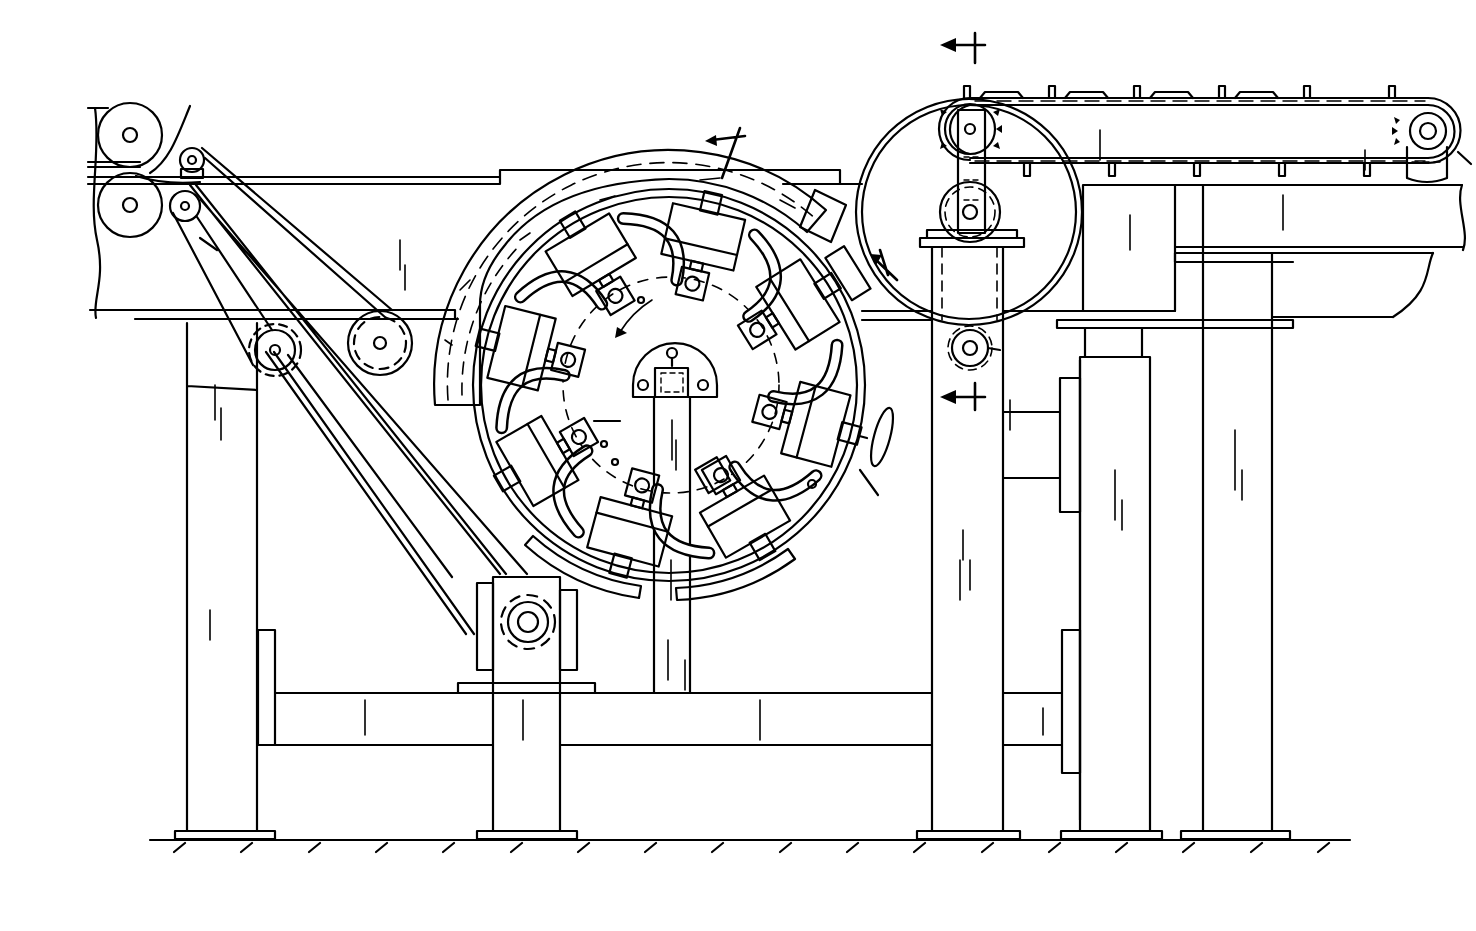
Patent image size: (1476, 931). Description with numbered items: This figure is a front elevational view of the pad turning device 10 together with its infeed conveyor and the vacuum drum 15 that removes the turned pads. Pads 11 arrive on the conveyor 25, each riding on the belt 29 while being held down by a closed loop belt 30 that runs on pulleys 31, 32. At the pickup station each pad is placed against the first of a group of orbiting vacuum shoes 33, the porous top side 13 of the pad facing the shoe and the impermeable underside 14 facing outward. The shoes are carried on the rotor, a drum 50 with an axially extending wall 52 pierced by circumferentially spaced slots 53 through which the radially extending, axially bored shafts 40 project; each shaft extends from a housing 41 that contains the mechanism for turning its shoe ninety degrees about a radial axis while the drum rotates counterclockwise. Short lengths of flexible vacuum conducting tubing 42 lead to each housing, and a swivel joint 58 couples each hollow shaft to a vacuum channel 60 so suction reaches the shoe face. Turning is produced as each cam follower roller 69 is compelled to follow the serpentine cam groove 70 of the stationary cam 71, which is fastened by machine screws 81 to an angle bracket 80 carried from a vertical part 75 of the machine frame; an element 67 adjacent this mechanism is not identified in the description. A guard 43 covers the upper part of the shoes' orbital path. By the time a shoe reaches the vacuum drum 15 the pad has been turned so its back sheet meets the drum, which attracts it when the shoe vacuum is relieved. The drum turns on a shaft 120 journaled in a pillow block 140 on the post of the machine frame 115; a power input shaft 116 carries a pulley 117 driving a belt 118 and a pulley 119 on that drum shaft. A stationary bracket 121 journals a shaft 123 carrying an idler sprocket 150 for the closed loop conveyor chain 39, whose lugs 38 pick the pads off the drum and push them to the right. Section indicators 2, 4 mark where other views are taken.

The pad turning device 10 is at (862, 548).
The pad 11 is at (1240, 65).
The top side 13 is at (742, 590).
The underside 14 is at (786, 585).
The vacuum drum 15 is at (893, 88).
The conveyor 25 is at (374, 528).
The belt 29 is at (318, 292).
The closed loop belt 30 is at (292, 229).
The pulley 31 is at (201, 152).
The pulley 32 is at (388, 313).
The vacuum shoe 33 is at (525, 537).
The lugs 38 is at (1058, 97).
The closed loop conveyor chain 39 is at (1183, 108).
The axially bored shaft 40 is at (815, 486).
The housing 41 is at (802, 512).
The flexible vacuum conducting tubing 42 is at (758, 372).
The guard 43 is at (698, 160).
The drum 50 is at (870, 336).
The axially extending wall 52 is at (879, 497).
The slots 53 is at (883, 406).
The swivel joint 58 is at (711, 466).
The vacuum channel 60 is at (798, 206).
The cam follower 67 is at (654, 305).
The cam follower roller 69 is at (630, 452).
The cam groove 70 is at (606, 443).
The stationary cam 71 is at (609, 409).
The vertical part of the machine frame 75 is at (694, 688).
The angle bracket 80 is at (688, 350).
The machine screws 81 is at (697, 342).
The machine frame 115 is at (1005, 540).
The shaft 116 is at (992, 345).
The pulley 117 is at (990, 353).
The belt 118 is at (1000, 288).
The pulley 119 is at (953, 196).
The shaft 120 is at (992, 212).
The bracket 121 is at (988, 172).
The shaft 123 is at (960, 108).
The pillow block 140 is at (945, 222).
The sprocket 150 is at (1000, 117).
The section line 2 is at (811, 202).
The section line 4 is at (962, 217).